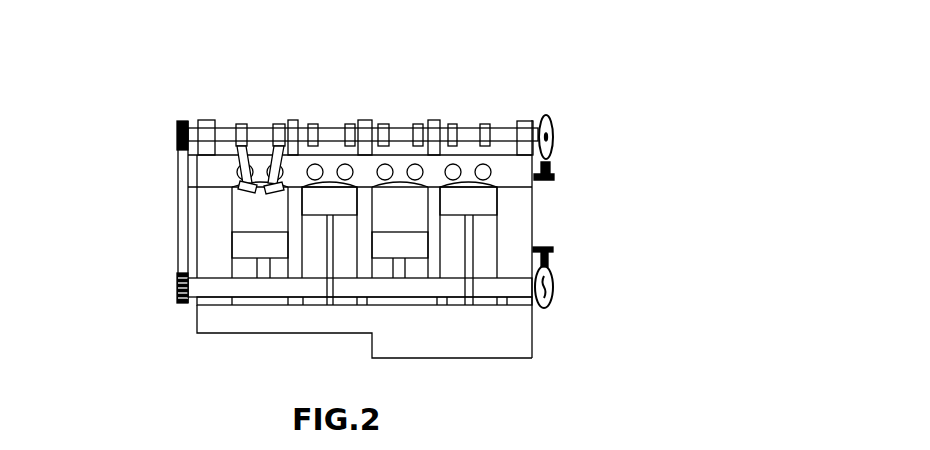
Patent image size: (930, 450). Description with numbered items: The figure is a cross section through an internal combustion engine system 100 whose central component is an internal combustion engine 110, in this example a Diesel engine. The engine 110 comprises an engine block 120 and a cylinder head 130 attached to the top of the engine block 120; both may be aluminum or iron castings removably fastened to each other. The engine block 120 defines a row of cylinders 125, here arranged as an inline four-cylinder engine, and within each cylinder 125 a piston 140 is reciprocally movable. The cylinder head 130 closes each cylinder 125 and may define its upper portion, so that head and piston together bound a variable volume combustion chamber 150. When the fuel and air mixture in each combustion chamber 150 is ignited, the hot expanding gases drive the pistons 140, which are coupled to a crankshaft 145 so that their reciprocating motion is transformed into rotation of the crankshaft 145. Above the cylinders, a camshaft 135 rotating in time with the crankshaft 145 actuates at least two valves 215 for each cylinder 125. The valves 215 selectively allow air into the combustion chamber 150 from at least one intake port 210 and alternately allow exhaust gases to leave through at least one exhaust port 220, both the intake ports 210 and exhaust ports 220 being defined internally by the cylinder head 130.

The internal combustion engine system 100 is at (568, 88).
The internal combustion engine 110 is at (538, 325).
The engine block 120 is at (200, 233).
The cylinder 125 is at (372, 215).
The cylinder head 130 is at (198, 182).
The camshaft 135 is at (240, 124).
The piston 140 is at (402, 243).
The crankshaft 145 is at (227, 292).
The combustion chamber 150 is at (472, 188).
The intake port 210 is at (388, 164).
The valve 215 is at (270, 188).
The exhaust port 220 is at (317, 163).